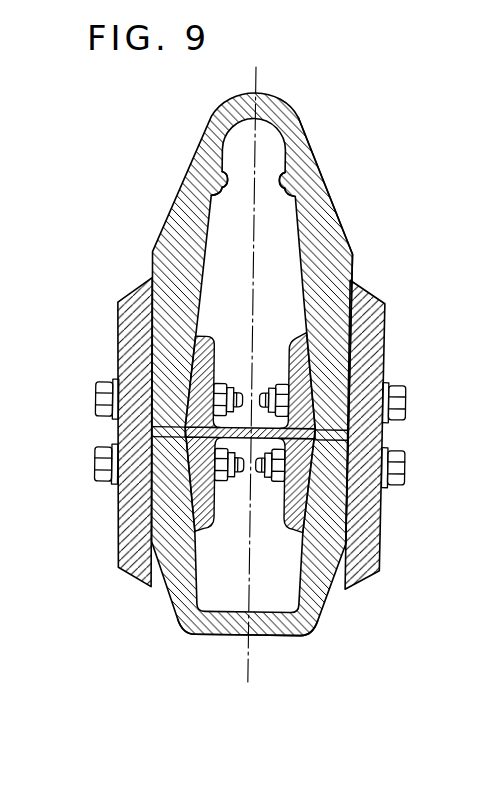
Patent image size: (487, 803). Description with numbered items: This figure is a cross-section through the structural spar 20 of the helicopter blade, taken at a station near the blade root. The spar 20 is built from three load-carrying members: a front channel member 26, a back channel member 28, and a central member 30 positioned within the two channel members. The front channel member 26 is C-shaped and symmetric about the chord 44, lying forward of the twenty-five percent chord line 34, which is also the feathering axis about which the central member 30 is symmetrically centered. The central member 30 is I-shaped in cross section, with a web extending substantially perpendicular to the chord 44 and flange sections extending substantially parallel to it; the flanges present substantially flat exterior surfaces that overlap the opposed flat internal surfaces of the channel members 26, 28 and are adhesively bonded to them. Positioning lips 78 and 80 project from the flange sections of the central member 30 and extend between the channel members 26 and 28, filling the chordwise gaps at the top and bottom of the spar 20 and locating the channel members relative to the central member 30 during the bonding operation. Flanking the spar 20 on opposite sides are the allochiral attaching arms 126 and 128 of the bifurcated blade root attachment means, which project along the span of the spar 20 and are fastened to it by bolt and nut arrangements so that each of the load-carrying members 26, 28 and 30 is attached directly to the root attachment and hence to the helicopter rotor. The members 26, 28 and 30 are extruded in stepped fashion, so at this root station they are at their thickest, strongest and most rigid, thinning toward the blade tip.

The structural spar 20 is at (293, 133).
The front channel member 26 is at (329, 226).
The back channel member 28 is at (214, 626).
The central member 30 is at (297, 349).
The 25% chord line 34 is at (258, 428).
The chord 44 is at (257, 208).
The positioning lip 78 is at (352, 430).
The positioning lip 80 is at (158, 428).
The attaching arm 126 is at (366, 298).
The attaching arm 128 is at (130, 302).